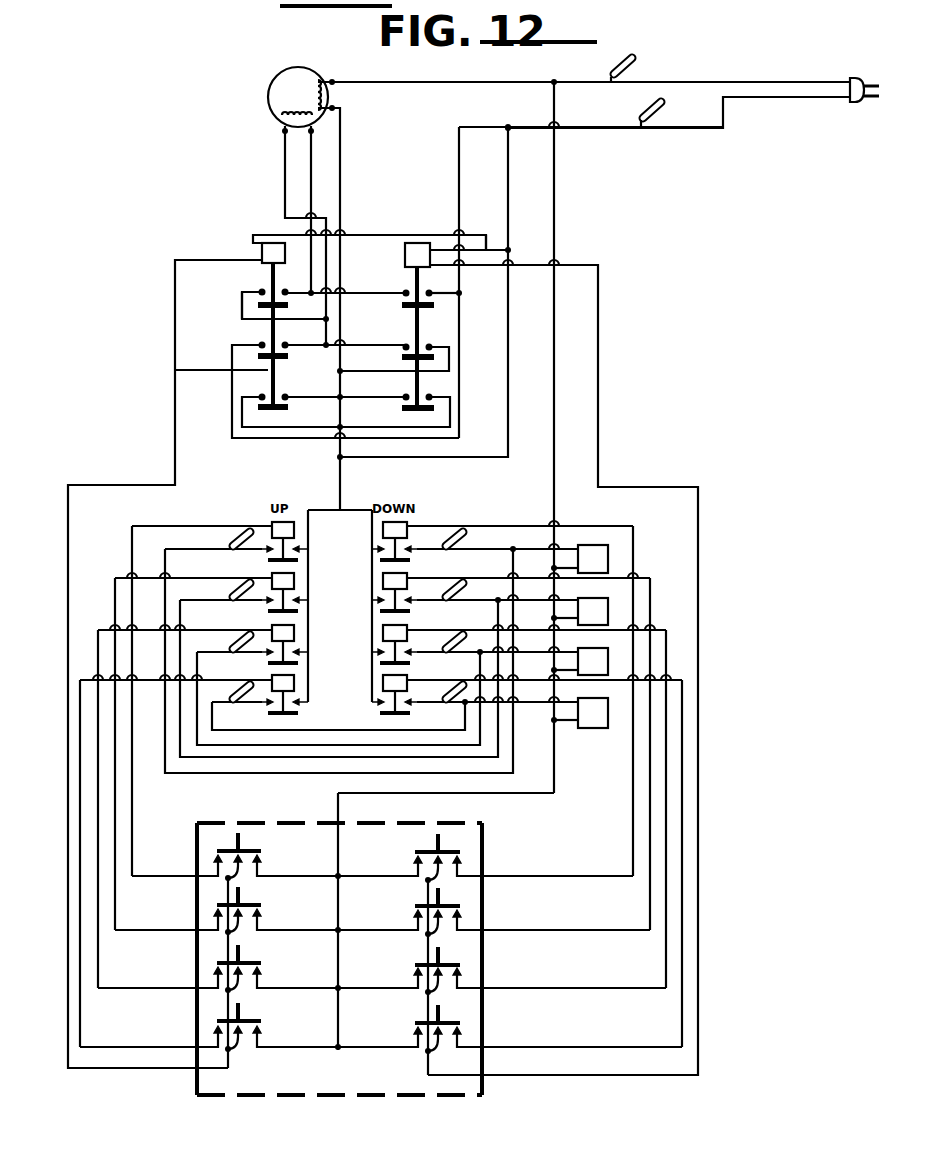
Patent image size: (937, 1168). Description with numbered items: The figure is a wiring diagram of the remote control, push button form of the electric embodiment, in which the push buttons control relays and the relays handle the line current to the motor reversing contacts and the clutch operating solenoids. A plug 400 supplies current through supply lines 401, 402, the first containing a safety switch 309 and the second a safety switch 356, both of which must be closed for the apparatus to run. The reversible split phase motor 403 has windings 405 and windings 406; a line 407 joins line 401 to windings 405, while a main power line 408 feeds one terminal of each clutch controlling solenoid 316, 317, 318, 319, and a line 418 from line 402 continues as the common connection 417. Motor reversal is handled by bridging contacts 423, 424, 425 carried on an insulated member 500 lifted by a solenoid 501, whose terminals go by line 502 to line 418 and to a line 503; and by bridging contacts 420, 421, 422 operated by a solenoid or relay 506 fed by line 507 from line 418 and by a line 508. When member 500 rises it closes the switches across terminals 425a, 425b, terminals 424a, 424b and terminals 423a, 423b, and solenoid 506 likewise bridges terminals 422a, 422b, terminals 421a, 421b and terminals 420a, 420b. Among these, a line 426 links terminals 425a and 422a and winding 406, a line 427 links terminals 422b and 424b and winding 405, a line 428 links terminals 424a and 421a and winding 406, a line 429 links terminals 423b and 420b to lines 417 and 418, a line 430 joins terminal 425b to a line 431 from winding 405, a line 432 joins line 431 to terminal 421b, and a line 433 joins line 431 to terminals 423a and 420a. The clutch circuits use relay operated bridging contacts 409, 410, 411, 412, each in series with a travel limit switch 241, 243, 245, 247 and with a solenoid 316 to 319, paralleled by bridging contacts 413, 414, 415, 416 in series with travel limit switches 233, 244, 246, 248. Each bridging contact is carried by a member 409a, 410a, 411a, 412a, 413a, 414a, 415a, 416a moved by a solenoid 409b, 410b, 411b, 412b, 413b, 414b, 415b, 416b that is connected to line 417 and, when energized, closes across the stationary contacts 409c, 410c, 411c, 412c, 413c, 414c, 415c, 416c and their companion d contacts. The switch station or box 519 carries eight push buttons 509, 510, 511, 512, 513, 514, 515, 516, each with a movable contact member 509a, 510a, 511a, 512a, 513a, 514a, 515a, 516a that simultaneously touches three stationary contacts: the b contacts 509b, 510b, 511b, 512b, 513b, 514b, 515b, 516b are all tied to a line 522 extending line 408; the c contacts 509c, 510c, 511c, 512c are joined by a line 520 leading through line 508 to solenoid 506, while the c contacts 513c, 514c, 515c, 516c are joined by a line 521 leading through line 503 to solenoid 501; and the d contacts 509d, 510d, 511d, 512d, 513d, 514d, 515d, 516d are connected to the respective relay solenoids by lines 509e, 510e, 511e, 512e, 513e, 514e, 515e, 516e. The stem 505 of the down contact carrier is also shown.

The plug 400 is at (856, 76).
The current supply line 401 is at (750, 80).
The current supply line 402 is at (790, 99).
The reversible motor 403 is at (289, 67).
The motor winding 405 is at (312, 68).
The motor winding 406 is at (270, 104).
The line 407 is at (470, 80).
The line 408 is at (556, 178).
The safety switch 309 is at (637, 60).
The safety switch 356 is at (656, 124).
The common connection 417 is at (338, 487).
The line 418 is at (507, 152).
The line 426 is at (311, 168).
The line 427 is at (458, 153).
The line 428 is at (283, 158).
The line 431 is at (342, 158).
The line 433 is at (344, 398).
The line 429 is at (275, 422).
The line 430 is at (241, 305).
The line 432 is at (449, 372).
The insulated member 500 is at (172, 372).
The solenoid 501 is at (268, 242).
The line 502 is at (253, 238).
The line 503 is at (174, 414).
The down switch bar 505 is at (410, 271).
The solenoid or relay 506 is at (412, 242).
The line 507 is at (474, 234).
The line 508 is at (600, 368).
The bridging contact 420 is at (450, 427).
The terminal 420a is at (404, 396).
The terminal 420b is at (432, 396).
The bridging contact 421 is at (402, 359).
The terminal 421a is at (404, 346).
The terminal 421b is at (432, 346).
The bridging contact 422 is at (429, 308).
The terminal 422a is at (404, 295).
The terminal 422b is at (432, 294).
The bridging contact 423 is at (262, 412).
The terminal 423a is at (287, 399).
The terminal 423b is at (260, 397).
The bridging contact 424 is at (283, 359).
The terminal 424a is at (287, 348).
The terminal 424b is at (260, 345).
The bridging contact 425 is at (288, 306).
The terminal 425a is at (286, 290).
The terminal 425b is at (260, 290).
The bridging contact 409 is at (410, 714).
The carrier member 409a is at (378, 703).
The solenoid 409b is at (383, 678).
The contact 409c is at (421, 695).
The bridging contact 410 is at (408, 664).
The carrier member 410a is at (378, 652).
The solenoid 410b is at (383, 628).
The contact 410c is at (421, 645).
The bridging contact 411 is at (408, 612).
The carrier member 411a is at (378, 601).
The solenoid 411b is at (383, 576).
The contact 411c is at (421, 592).
The bridging contact 412 is at (408, 561).
The carrier member 412a is at (378, 550).
The solenoid 412b is at (396, 530).
The contact 412c is at (421, 541).
The bridging contact 413 is at (268, 713).
The carrier member 413a is at (300, 700).
The solenoid 413b is at (293, 680).
The contact 413c is at (260, 697).
The bridging contact 414 is at (268, 663).
The carrier member 414a is at (300, 650).
The solenoid 414b is at (293, 630).
The contact 414c is at (260, 647).
The bridging contact 415 is at (268, 611).
The carrier member 415a is at (300, 598).
The solenoid 415b is at (293, 578).
The contact 415c is at (260, 595).
The bridging contact 416 is at (268, 560).
The carrier member 416a is at (300, 547).
The solenoid 416b is at (272, 525).
The contact 416c is at (261, 544).
The travel limit switch 233 is at (229, 698).
The travel limit switch 241 is at (458, 697).
The travel limit switch 243 is at (458, 643).
The travel limit switch 244 is at (229, 648).
The travel limit switch 245 is at (460, 592).
The travel limit switch 246 is at (229, 596).
The travel limit switch 247 is at (458, 540).
The travel limit switch 248 is at (229, 545).
The clutch controlling solenoid 316 is at (598, 728).
The clutch controlling solenoid 317 is at (603, 663).
The clutch controlling solenoid 318 is at (603, 613).
The clutch controlling solenoid 319 is at (603, 561).
The push button 509 is at (462, 1023).
The movable contact member 509a is at (441, 1008).
The stationary contact 509b is at (414, 1039).
The stationary contact 509c is at (436, 1048).
The stationary contact 509d is at (462, 1046).
The line 509e is at (566, 1050).
The push button 510 is at (462, 966).
The movable contact member 510a is at (441, 950).
The stationary contact 510b is at (414, 981).
The stationary contact 510c is at (434, 990).
The stationary contact 510d is at (462, 986).
The line 510e is at (566, 990).
The push button 511 is at (462, 907).
The movable contact member 511a is at (441, 892).
The stationary contact 511b is at (414, 923).
The stationary contact 511c is at (434, 930).
The stationary contact 511d is at (462, 927).
The line 511e is at (560, 931).
The push button 512 is at (462, 852).
The movable contact member 512a is at (442, 833).
The stationary contact 512b is at (414, 868).
The stationary contact 512c is at (434, 875).
The stationary contact 512d is at (462, 870).
The line 512e is at (565, 876).
The push button 513 is at (263, 1021).
The movable contact member 513a is at (236, 1006).
The stationary contact 513b is at (261, 1037).
The stationary contact 513c is at (242, 1046).
The stationary contact 513d is at (214, 1040).
The line 513e is at (80, 1028).
The push button 514 is at (263, 963).
The movable contact member 514a is at (236, 947).
The stationary contact 514b is at (261, 978).
The stationary contact 514c is at (242, 985).
The stationary contact 514d is at (214, 981).
The line 514e is at (98, 962).
The push button 515 is at (263, 905).
The movable contact member 515a is at (236, 889).
The stationary contact 515b is at (261, 921).
The stationary contact 515c is at (242, 927).
The stationary contact 515d is at (214, 924).
The line 515e is at (115, 886).
The push button 516 is at (263, 851).
The movable contact member 516a is at (236, 832).
The stationary contact 516b is at (261, 866).
The stationary contact 516c is at (242, 873).
The stationary contact 516d is at (214, 869).
The line 516e is at (132, 830).
The switch station or box 519 is at (326, 1097).
The line 520 is at (413, 1098).
The line 521 is at (238, 1075).
The line 522 is at (370, 793).